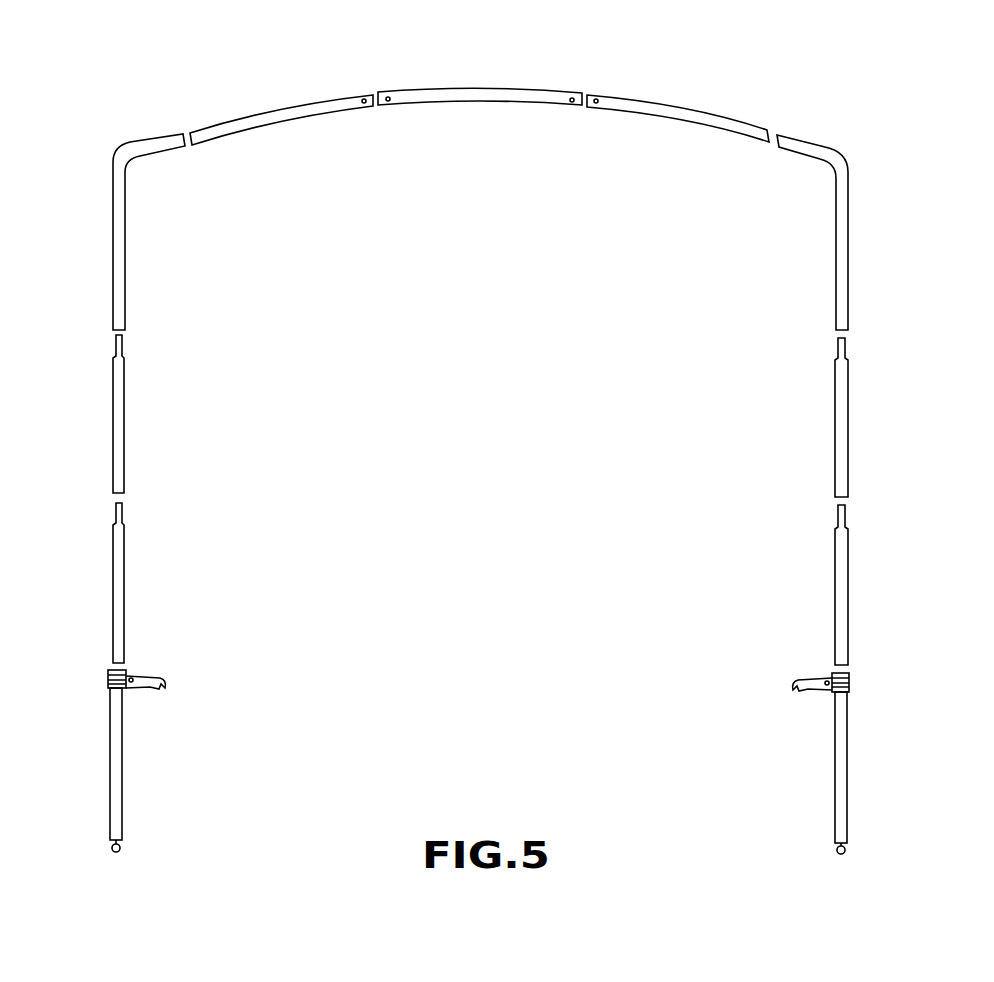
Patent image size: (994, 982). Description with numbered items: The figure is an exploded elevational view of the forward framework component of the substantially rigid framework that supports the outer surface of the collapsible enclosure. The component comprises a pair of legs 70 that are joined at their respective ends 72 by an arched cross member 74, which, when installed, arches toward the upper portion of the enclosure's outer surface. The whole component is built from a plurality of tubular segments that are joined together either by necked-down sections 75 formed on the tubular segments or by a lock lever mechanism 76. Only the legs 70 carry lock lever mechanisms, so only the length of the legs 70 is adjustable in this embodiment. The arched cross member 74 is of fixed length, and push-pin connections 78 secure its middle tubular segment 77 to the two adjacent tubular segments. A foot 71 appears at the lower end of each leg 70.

The legs 70 is at (476, 431).
The lower leg section with foot 71 is at (123, 843).
The ends of the legs 72 is at (116, 162).
The arched cross member 74 is at (670, 94).
The necked-down sections 75 is at (170, 150).
The lock lever mechanism 76 is at (108, 678).
The middle tubular segment 77 is at (451, 88).
The push-pin connections 78 is at (362, 88).